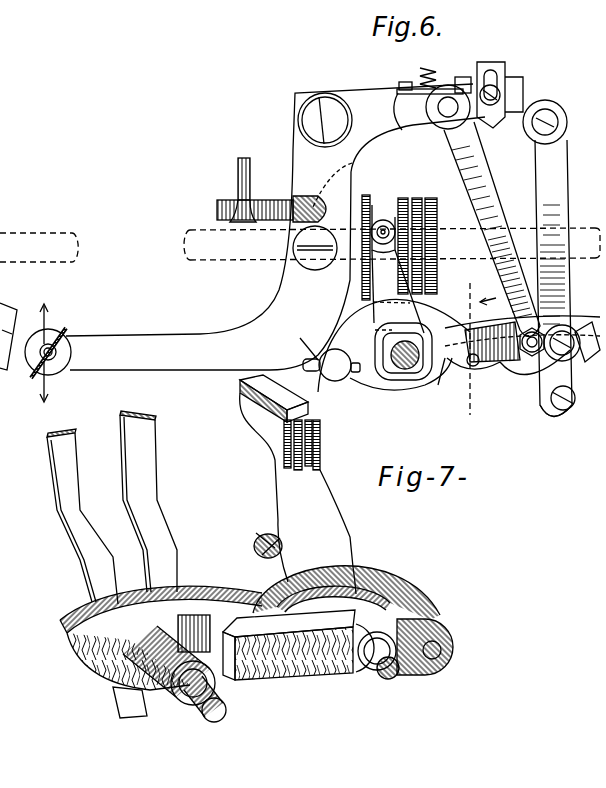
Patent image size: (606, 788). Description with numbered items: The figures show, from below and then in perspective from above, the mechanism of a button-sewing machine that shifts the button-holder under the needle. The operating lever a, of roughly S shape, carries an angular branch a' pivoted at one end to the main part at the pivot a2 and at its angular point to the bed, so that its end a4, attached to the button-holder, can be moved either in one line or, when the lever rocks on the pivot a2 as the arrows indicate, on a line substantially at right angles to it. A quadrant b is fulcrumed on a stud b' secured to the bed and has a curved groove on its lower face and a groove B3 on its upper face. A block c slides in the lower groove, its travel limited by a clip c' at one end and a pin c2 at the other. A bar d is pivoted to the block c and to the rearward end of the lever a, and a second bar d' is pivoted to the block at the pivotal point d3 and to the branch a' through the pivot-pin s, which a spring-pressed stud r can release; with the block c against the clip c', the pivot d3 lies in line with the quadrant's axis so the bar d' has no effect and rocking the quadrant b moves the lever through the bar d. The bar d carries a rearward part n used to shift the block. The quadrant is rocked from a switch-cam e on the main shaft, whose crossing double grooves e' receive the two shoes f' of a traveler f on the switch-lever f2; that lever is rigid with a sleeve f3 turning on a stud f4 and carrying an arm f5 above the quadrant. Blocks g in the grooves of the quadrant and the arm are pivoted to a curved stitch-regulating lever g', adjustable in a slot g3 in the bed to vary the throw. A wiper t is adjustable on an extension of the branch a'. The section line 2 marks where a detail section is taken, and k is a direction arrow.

In FIG. 6, the lever a is at (275, 227).
In FIG. 6, the angular arm or branch a' is at (360, 150).
In FIG. 6, the pivot a2 is at (315, 248).
In FIG. 6, the end of lever a4 is at (48, 353).
In FIG. 6, the frame piece B is at (8, 325).
In FIG. 6, the quadrant b is at (523, 318).
In FIG. 7, the quadrant b is at (161, 638).
In FIG. 7, the stud b' is at (189, 674).
In FIG. 7, the groove B3 is at (200, 612).
In FIG. 6, the block c is at (534, 340).
In FIG. 6, the clip c' is at (36, 359).
In FIG. 6, the pin c2 is at (475, 366).
In FIG. 6, the bar or rod d is at (549, 258).
In FIG. 7, the bar or rod d is at (82, 516).
In FIG. 6, the bar or rod d' is at (496, 229).
In FIG. 7, the bar or rod d' is at (148, 501).
In FIG. 6, the pivotal point d3 is at (530, 356).
In FIG. 6, the switch-cam e is at (434, 246).
In FIG. 6, the double grooves e' is at (404, 237).
In FIG. 7, the traveler f is at (283, 398).
In FIG. 7, the shoes f' is at (312, 459).
In FIG. 6, the switch-lever f2 is at (397, 269).
In FIG. 7, the switch-lever f2 is at (298, 493).
In FIG. 7, the sleeve f3 is at (355, 592).
In FIG. 6, the pin or stud f4 is at (400, 369).
In FIG. 7, the pin or stud f4 is at (395, 676).
In FIG. 6, the arm f5 is at (437, 379).
In FIG. 7, the arm f5 is at (289, 645).
In FIG. 7, the block g is at (334, 615).
In FIG. 6, the stitch-regulating lever g' is at (394, 344).
In FIG. 6, the slot g3 is at (352, 372).
In FIG. 6, the part or extension n is at (558, 420).
In FIG. 7, the part or extension n is at (130, 702).
In FIG. 6, the spring-pressed stud r is at (466, 77).
In FIG. 6, the pivot-pin s is at (448, 107).
In FIG. 6, the wiper t is at (505, 66).
In FIG. 6, the section line 2 is at (466, 350).
In FIG. 6, the direction arrow k is at (490, 298).